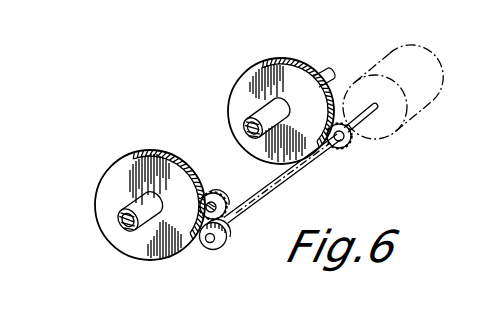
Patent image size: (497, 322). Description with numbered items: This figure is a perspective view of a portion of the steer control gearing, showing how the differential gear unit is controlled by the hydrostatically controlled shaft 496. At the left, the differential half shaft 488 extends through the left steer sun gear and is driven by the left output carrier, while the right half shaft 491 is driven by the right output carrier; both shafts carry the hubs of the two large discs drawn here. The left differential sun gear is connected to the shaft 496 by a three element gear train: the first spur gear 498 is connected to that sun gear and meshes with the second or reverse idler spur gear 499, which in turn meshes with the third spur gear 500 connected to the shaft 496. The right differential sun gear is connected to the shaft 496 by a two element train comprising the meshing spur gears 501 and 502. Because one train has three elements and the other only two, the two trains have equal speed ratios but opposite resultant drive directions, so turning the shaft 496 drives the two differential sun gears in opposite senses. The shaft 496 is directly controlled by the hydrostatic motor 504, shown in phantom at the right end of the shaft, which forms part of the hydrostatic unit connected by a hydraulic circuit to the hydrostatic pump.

The differential half shaft 488 is at (118, 221).
The right half shaft 491 is at (247, 126).
The hydrostatically controlled shaft 496 is at (288, 187).
The first spur gear 498 is at (110, 178).
The reverse idler spur gear 499 is at (213, 192).
The third spur gear 500 is at (209, 250).
The spur gear 501 is at (295, 60).
The spur gear 502 is at (351, 147).
The hydrostatic motor 504 is at (380, 68).